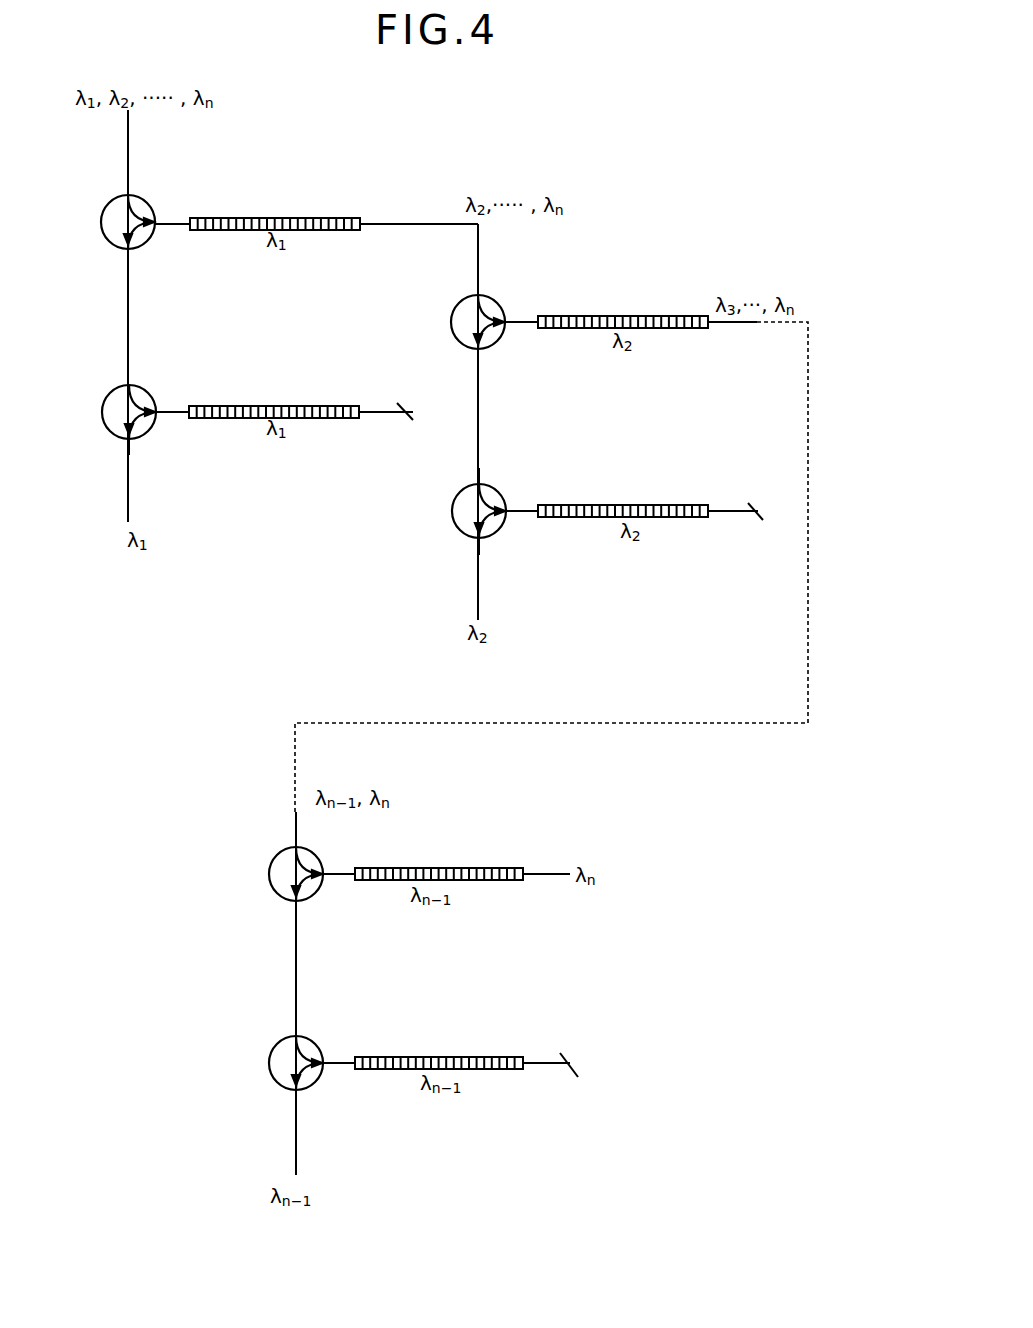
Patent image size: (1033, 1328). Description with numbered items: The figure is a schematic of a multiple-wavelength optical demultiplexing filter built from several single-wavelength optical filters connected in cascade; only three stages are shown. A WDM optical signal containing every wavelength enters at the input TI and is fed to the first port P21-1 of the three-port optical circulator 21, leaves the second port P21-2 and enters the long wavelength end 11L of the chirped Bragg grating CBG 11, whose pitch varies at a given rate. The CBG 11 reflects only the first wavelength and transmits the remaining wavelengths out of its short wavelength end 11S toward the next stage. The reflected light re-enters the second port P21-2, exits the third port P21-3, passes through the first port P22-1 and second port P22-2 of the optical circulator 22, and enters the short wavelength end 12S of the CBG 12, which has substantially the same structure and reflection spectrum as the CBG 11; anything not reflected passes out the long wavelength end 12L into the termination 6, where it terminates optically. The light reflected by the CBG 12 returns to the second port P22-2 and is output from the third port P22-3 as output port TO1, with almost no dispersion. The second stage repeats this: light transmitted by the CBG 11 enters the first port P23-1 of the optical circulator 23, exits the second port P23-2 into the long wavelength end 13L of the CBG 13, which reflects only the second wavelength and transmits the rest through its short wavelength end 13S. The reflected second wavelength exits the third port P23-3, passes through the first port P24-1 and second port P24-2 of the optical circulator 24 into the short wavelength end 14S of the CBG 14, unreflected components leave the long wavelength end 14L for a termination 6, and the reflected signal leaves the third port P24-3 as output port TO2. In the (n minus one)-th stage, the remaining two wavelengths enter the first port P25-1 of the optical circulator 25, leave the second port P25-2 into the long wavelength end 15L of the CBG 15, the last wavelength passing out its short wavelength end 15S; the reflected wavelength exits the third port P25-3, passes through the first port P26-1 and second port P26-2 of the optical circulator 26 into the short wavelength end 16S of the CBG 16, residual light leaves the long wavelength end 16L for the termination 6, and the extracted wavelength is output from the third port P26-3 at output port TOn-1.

The three-port optical circulator 21 is at (102, 222).
The three-port optical circulator 22 is at (103, 412).
The three-port optical circulator 23 is at (452, 322).
The three-port optical circulator 24 is at (452, 511).
The three-port optical circulator 25 is at (269, 874).
The three-port optical circulator 26 is at (269, 1063).
The CBG 11 is at (284, 218).
The CBG 12 is at (258, 406).
The CBG 13 is at (613, 316).
The CBG 14 is at (614, 505).
The CBG 15 is at (442, 868).
The CBG 16 is at (440, 1057).
The long wavelength end 11L is at (190, 218).
The short wavelength end 11S is at (362, 218).
The short wavelength end 12S is at (189, 406).
The long wavelength end 12L is at (360, 406).
The long wavelength end 13L is at (538, 316).
The short wavelength end 13S is at (708, 330).
The short wavelength end 14S is at (538, 505).
The long wavelength end 14L is at (712, 505).
The long wavelength end 15L is at (355, 868).
The short wavelength end 15S is at (525, 868).
The short wavelength end 16S is at (355, 1057).
The long wavelength end 16L is at (525, 1057).
The first port P21-1 is at (128, 190).
The second port P21-2 is at (157, 226).
The third port P21-3 is at (128, 253).
The first port P22-1 is at (128, 375).
The second port P22-2 is at (160, 415).
The third port P22-3 is at (129, 441).
The first port P23-1 is at (478, 290).
The second port P23-2 is at (508, 325).
The third port P23-3 is at (478, 351).
The first port P24-1 is at (479, 478).
The second port P24-2 is at (510, 515).
The third port P24-3 is at (479, 545).
The first port P25-1 is at (296, 835).
The second port P25-2 is at (328, 878).
The third port P25-3 is at (296, 920).
The first port P26-1 is at (296, 1022).
The second port P26-2 is at (333, 1065).
The third port P26-3 is at (296, 1103).
The termination 6 is at (413, 412).
The input terminal TI is at (130, 113).
The output port TO1 is at (131, 510).
The output port TO2 is at (481, 610).
The output port TOn-1 is at (298, 1170).